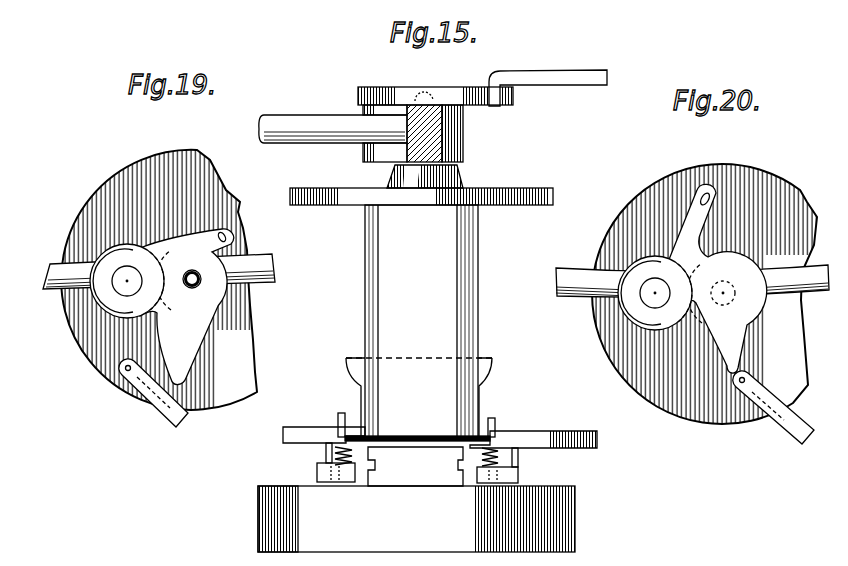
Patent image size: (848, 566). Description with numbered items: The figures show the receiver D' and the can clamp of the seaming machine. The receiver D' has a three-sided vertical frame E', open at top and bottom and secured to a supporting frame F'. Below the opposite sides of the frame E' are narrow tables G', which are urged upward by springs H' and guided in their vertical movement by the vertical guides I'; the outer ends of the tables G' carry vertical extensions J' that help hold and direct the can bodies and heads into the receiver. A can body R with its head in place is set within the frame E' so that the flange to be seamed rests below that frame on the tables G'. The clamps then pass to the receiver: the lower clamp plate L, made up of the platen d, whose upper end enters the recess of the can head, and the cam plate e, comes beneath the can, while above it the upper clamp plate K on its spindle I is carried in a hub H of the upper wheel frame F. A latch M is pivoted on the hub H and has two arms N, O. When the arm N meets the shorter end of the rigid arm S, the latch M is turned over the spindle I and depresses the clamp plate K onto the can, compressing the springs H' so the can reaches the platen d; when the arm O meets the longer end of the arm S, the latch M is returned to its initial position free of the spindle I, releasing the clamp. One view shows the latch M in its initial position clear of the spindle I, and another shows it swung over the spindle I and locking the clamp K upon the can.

In FIG. 15, the latch M is at (412, 96).
In FIG. 19, the latch M is at (127, 281).
In FIG. 20, the latch M is at (655, 293).
In FIG. 15, the rigid arm S is at (581, 86).
In FIG. 19, the rigid arm S is at (160, 414).
In FIG. 20, the rigid arm S is at (773, 411).
In FIG. 15, the upper wheel frame F is at (333, 118).
In FIG. 19, the upper wheel frame F is at (148, 271).
In FIG. 20, the upper wheel frame F is at (692, 271).
In FIG. 15, the hub H is at (370, 133).
In FIG. 15, the spindle I is at (437, 139).
In FIG. 19, the spindle I is at (197, 278).
In FIG. 20, the spindle I is at (738, 278).
In FIG. 15, the clamp plate K is at (502, 193).
In FIG. 19, the clamp plate K is at (160, 282).
In FIG. 20, the clamp plate K is at (712, 420).
In FIG. 15, the can body R is at (421, 321).
In FIG. 15, the receiver D' is at (423, 346).
In FIG. 15, the three-sided vertical frame E' is at (429, 397).
In FIG. 15, the vertical extension J' is at (419, 408).
In FIG. 15, the narrow table G' is at (418, 432).
In FIG. 15, the supporting frame F' is at (533, 427).
In FIG. 15, the vertical guide I' is at (418, 463).
In FIG. 15, the spring H' is at (418, 464).
In FIG. 15, the clamp plate L is at (258, 508).
In FIG. 15, the platen d is at (415, 467).
In FIG. 15, the cam plate e is at (416, 519).
In FIG. 19, the arm O is at (216, 239).
In FIG. 20, the arm O is at (702, 201).
In FIG. 19, the arm N is at (187, 307).
In FIG. 20, the arm N is at (742, 346).